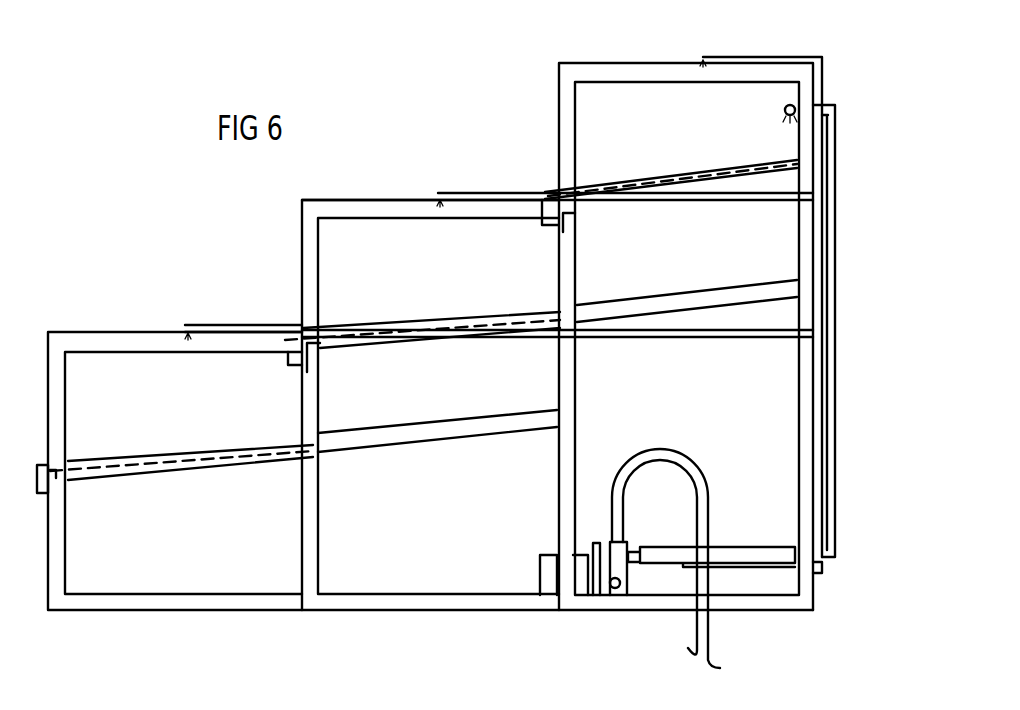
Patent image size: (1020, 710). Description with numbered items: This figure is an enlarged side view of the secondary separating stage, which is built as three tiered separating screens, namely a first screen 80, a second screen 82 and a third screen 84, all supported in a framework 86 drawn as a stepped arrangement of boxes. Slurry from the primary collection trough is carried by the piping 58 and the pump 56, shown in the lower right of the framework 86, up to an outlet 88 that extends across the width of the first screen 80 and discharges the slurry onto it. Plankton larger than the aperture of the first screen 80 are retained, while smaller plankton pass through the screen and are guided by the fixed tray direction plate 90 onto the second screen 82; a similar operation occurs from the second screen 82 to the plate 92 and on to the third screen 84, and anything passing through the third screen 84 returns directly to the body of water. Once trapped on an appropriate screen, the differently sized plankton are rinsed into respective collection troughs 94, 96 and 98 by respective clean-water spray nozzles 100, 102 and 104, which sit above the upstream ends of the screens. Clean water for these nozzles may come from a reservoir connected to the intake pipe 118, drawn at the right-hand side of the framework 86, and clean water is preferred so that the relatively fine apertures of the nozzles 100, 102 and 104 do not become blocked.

The pump 56 is at (583, 585).
The piping 58 is at (712, 638).
The first screen 80 is at (660, 190).
The second screen 82 is at (486, 322).
The third screen 84 is at (188, 462).
The framework 86 is at (157, 598).
The outlet 88 is at (785, 110).
The fixed tray direction plate 90 is at (710, 292).
The plate 92 is at (436, 430).
The collection trough 94 is at (548, 195).
The collection trough 96 is at (284, 339).
The collection trough 98 is at (38, 465).
The clean-water spray nozzle 100 is at (703, 58).
The clean-water spray nozzle 102 is at (440, 194).
The clean-water spray nozzle 104 is at (188, 331).
The intake pipe 118 is at (813, 400).